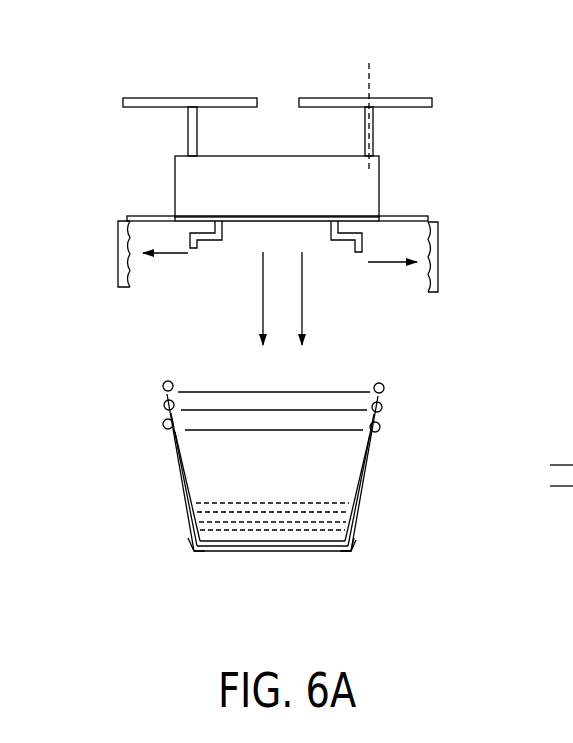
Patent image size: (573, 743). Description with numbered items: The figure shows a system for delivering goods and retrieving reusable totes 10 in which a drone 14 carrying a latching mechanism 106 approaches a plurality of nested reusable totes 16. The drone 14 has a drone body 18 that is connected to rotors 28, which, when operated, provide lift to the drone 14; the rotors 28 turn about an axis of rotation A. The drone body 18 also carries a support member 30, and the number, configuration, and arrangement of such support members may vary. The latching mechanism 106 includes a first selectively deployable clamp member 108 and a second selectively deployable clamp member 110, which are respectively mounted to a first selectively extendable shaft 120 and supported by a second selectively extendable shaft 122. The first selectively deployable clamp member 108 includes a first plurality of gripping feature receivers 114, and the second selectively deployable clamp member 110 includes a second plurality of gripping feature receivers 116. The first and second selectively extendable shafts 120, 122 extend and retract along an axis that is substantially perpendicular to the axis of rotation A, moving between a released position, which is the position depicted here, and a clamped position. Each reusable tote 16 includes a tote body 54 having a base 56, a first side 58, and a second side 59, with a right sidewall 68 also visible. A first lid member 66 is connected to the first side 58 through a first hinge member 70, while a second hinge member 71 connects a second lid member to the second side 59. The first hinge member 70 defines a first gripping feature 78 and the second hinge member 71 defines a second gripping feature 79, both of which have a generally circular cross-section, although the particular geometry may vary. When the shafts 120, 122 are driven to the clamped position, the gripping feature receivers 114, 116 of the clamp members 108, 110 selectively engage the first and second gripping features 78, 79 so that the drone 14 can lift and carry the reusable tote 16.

The system for delivering goods and retrieving reusable totes 10 is at (105, 88).
The rotors 28 is at (298, 90).
The axis of rotation A is at (372, 82).
The drone body 18 is at (172, 160).
The drone 14 is at (398, 165).
The first selectively extendable shaft 120 is at (137, 215).
The second selectively extendable shaft 122 is at (401, 218).
The latching mechanism 106 is at (284, 238).
The first selectively deployable clamp member 108 is at (120, 275).
The second selectively deployable clamp member 110 is at (431, 269).
The first plurality of gripping feature receivers 114 is at (128, 273).
The second plurality of gripping feature receivers 116 is at (415, 283).
The support member 30 is at (205, 235).
The reusable tote 16 is at (284, 513).
The first hinge member 70 is at (163, 425).
The first gripping feature 78 is at (162, 432).
The second hinge member 71 is at (383, 428).
The second gripping feature 79 is at (380, 432).
The first lid member 66 is at (178, 480).
The right sidewall 68 is at (367, 487).
The first side 58 is at (190, 540).
The second side 59 is at (355, 542).
The base 56 is at (240, 553).
The tote body 54 is at (352, 553).